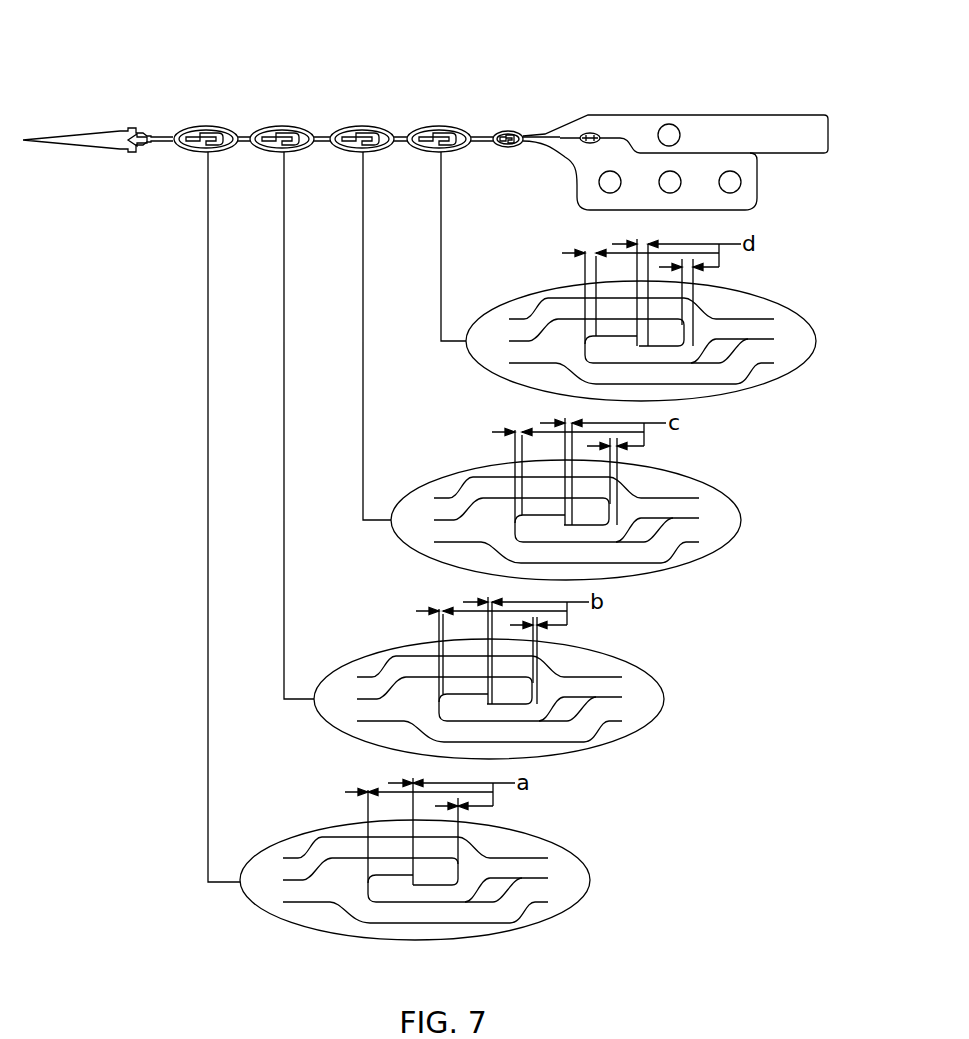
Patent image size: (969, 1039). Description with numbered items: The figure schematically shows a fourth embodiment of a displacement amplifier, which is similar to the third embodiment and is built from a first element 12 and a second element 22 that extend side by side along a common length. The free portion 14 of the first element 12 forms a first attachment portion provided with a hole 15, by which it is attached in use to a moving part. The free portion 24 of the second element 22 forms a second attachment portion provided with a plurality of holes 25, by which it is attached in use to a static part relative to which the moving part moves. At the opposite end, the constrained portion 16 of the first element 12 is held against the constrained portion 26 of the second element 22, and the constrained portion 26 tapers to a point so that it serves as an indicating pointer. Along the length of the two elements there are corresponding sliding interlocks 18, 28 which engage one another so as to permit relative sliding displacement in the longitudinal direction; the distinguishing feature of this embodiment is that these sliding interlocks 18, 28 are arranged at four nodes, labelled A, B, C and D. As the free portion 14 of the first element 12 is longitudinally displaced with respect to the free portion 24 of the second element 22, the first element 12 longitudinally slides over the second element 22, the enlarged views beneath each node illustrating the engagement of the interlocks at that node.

The first element 12 is at (397, 128).
The free portion of the first element 14 is at (688, 145).
The hole 15 is at (668, 124).
The constrained portion of the first element 16 is at (98, 117).
The sliding interlock 18 is at (358, 105).
The second element 22 is at (318, 139).
The free portion of the second element 24 is at (696, 188).
The holes 25 is at (735, 185).
The constrained portion of the second element 26 is at (110, 138).
The sliding interlock 28 is at (267, 125).